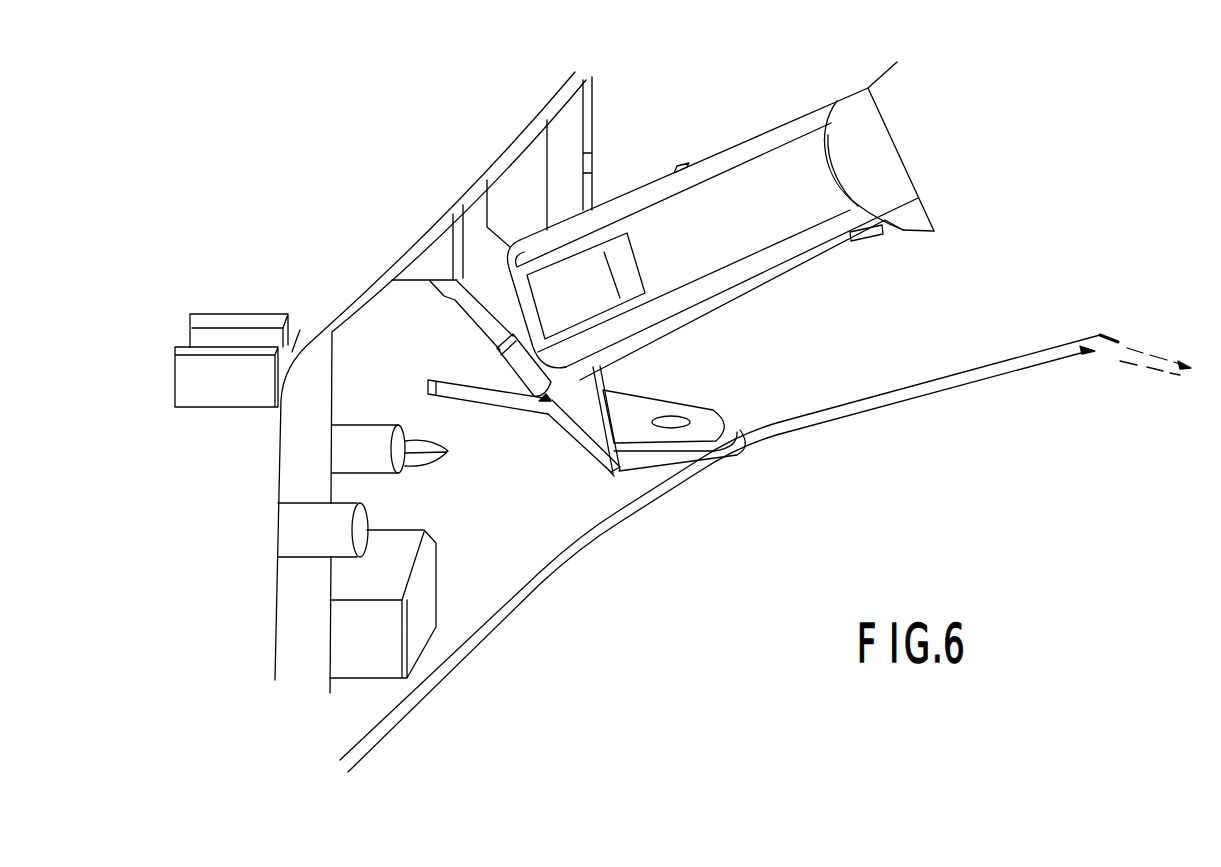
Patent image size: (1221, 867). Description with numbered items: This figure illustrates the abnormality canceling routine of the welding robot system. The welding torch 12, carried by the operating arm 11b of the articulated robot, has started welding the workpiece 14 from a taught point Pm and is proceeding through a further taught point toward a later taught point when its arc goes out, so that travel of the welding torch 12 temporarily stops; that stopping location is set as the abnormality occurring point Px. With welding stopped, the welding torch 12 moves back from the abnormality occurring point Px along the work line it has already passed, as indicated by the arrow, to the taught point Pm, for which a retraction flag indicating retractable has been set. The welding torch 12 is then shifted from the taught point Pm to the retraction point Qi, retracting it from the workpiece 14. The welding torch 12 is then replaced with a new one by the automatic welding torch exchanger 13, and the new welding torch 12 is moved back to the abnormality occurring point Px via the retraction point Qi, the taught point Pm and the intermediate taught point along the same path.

The operating arm 11b is at (795, 257).
The welding torch 12 is at (517, 366).
The automatic welding torch exchanger 13 is at (1168, 371).
The workpiece 14 is at (507, 615).
The taught point Pm is at (662, 453).
The abnormality occurring point Px is at (426, 433).
The retraction point Qi is at (1099, 363).